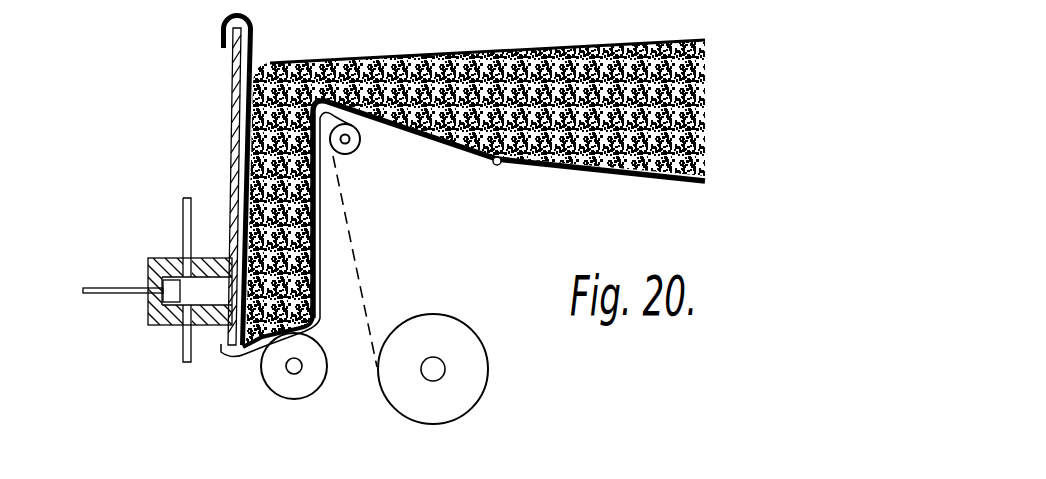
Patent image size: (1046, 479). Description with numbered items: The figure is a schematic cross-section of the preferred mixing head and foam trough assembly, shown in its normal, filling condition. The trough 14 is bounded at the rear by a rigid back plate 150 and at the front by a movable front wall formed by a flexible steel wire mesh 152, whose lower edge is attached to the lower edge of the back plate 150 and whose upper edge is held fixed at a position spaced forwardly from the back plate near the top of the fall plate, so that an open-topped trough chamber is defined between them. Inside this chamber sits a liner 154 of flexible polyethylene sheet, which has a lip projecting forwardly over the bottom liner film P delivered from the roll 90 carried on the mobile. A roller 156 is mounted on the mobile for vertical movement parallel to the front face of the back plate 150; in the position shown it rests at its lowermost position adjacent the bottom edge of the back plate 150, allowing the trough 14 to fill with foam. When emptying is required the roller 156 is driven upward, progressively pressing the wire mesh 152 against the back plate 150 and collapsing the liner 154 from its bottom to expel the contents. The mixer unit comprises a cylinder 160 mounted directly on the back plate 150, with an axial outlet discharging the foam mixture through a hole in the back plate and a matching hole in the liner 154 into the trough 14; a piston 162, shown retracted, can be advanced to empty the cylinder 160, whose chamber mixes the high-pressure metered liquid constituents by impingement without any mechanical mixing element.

The trough 14 is at (221, 136).
The roll 90 is at (466, 394).
The back plate 150 is at (233, 72).
The steel wire mesh 152 is at (319, 257).
The liner 154 is at (255, 54).
The roller 156 is at (300, 382).
The cylinder 160 is at (171, 327).
The piston 162 is at (149, 318).
The liner film P is at (346, 217).